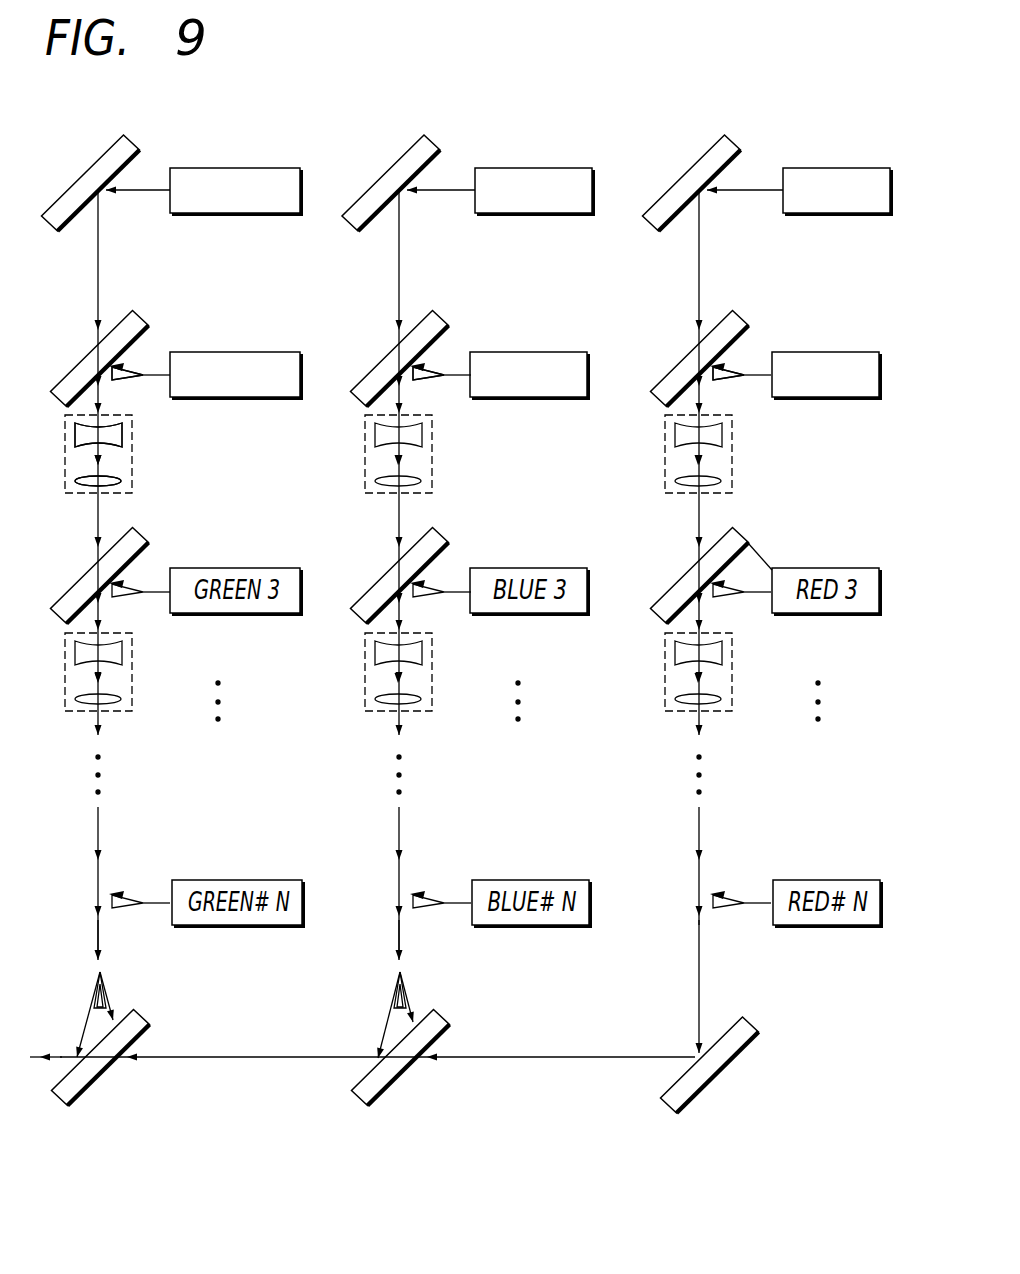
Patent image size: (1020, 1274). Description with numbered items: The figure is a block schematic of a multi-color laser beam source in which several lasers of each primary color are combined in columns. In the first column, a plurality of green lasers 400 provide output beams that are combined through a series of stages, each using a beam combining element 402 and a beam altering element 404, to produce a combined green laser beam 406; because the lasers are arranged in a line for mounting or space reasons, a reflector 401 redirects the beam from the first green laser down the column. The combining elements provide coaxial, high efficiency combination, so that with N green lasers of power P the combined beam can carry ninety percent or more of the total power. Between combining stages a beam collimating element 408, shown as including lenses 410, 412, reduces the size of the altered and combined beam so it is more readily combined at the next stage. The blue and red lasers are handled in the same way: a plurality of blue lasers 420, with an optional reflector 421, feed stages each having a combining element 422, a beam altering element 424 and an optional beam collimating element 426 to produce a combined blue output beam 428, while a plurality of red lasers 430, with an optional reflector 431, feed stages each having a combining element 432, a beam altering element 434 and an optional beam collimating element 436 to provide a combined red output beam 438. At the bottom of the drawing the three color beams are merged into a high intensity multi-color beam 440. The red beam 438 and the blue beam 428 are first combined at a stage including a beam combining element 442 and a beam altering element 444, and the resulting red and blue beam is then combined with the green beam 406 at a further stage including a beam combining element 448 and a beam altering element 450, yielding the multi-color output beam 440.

The green lasers 400 is at (227, 167).
The reflector 401 is at (101, 155).
The beam combining elements 402 is at (62, 392).
The beam altering elements 404 is at (113, 371).
The combined green laser beam 406 is at (101, 928).
The beam collimating element 408 is at (132, 462).
The lens 410 is at (122, 430).
The lens 412 is at (122, 484).
The blue lasers 420 is at (527, 168).
The reflector 421 is at (390, 164).
The combining element 422 is at (365, 372).
The beam altering element 424 is at (420, 370).
The beam collimating element 426 is at (432, 440).
The combined blue output beam 428 is at (402, 928).
The red lasers 430 is at (835, 168).
The reflector 431 is at (692, 162).
The combining element 432 is at (662, 375).
The beam altering element 434 is at (723, 367).
The beam collimating element 436 is at (732, 443).
The combined red output beam 438 is at (702, 948).
The high intensity multi-color beam 440 is at (65, 1053).
The beam combining element 442 is at (393, 1085).
The beam altering element 444 is at (395, 992).
The beam combining element 448 is at (92, 1080).
The beam altering element 450 is at (104, 995).